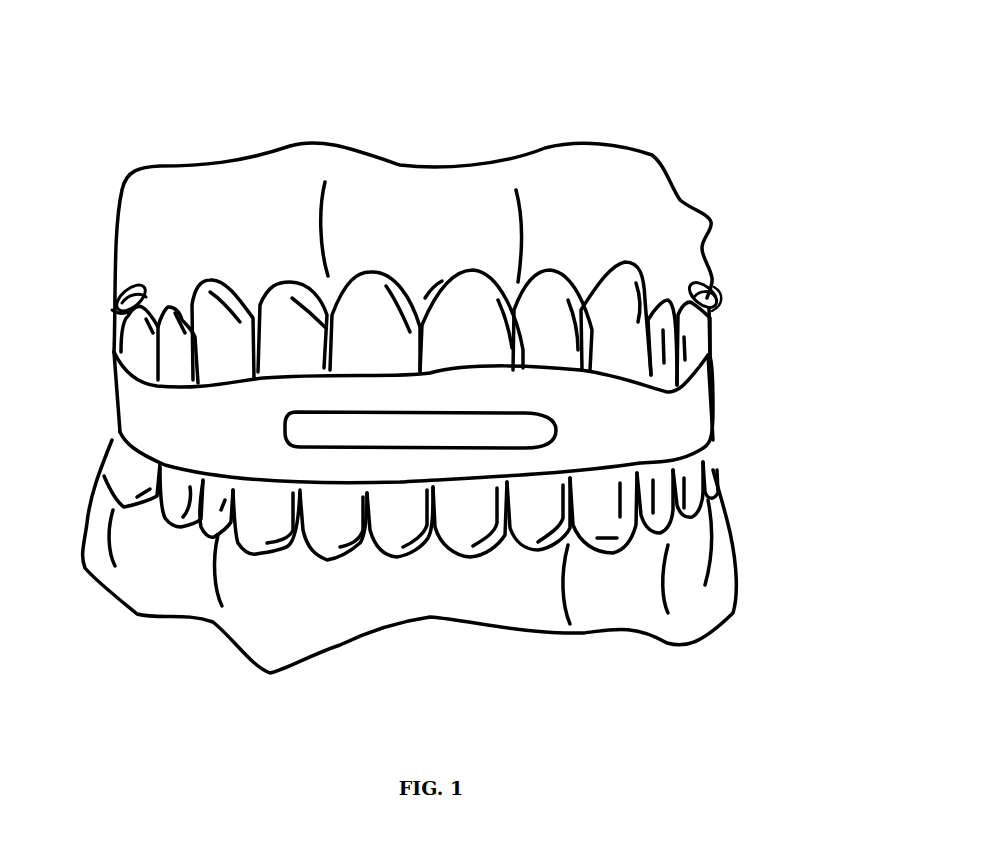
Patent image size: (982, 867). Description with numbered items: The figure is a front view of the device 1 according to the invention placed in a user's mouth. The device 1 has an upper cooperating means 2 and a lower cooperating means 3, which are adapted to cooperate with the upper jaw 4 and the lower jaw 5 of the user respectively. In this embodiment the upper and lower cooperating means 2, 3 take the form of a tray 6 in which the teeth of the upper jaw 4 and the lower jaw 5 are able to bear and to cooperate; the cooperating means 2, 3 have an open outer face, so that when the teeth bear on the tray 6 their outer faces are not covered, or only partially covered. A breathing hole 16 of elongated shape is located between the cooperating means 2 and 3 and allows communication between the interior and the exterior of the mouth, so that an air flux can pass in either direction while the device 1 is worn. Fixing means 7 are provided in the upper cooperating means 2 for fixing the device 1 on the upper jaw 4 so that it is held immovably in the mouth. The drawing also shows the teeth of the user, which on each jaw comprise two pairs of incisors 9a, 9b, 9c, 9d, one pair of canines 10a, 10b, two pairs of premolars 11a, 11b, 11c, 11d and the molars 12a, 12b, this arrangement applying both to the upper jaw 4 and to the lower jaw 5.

The device 1 is at (441, 486).
The upper cooperating means 2 is at (575, 389).
The lower cooperating means 3 is at (578, 455).
The upper jaw 4 is at (290, 170).
The lower jaw 5 is at (153, 583).
The tray 6 is at (119, 351).
The fixing means 7 is at (721, 297).
The incisor 9a is at (475, 297).
The incisor 9b is at (372, 300).
The incisor 9c is at (550, 290).
The incisor 9d is at (277, 300).
The canine 10a is at (613, 292).
The canine 10b is at (215, 307).
The premolar 11a is at (660, 307).
The premolar 11b is at (170, 307).
The premolar 11c is at (686, 300).
The premolar 11d is at (141, 300).
The molar 12a is at (707, 276).
The molar 12b is at (124, 290).
The breathing hole 16 is at (408, 432).